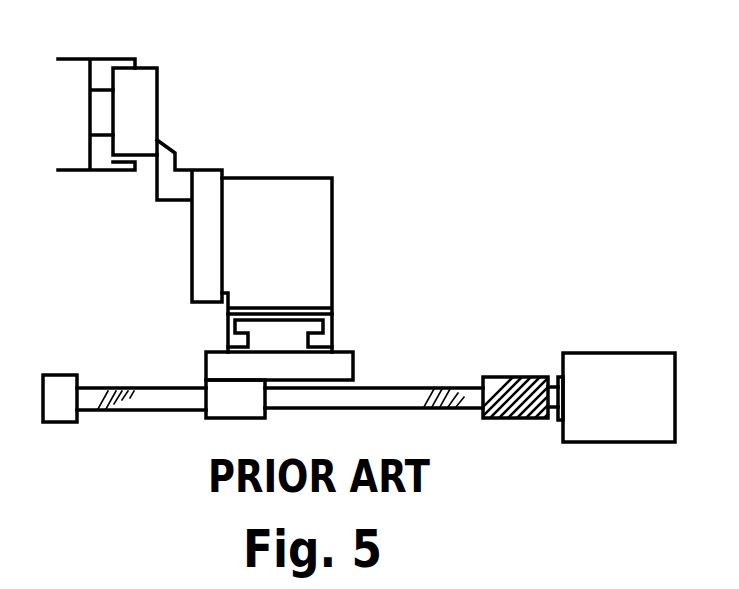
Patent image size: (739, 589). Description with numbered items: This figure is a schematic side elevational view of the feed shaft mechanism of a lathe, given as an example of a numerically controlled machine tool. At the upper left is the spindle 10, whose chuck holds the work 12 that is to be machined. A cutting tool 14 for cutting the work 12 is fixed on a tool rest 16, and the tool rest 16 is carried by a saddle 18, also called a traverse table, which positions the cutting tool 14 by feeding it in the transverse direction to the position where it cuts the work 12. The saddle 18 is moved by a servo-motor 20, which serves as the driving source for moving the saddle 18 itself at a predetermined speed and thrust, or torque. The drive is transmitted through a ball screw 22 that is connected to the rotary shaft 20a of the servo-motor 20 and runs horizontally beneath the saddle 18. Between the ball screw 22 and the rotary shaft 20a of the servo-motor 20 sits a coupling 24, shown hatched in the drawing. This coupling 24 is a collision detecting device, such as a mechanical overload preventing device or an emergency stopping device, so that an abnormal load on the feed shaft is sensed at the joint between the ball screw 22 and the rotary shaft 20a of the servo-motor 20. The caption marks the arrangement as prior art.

The spindle 10 is at (80, 62).
The work 12 is at (155, 68).
The cutting tool 14 is at (160, 146).
The tool rest 16 is at (297, 190).
The saddle 18 is at (330, 343).
The servo-motor 20 is at (637, 368).
The rotary shaft 20a is at (555, 417).
The ball screw 22 is at (382, 395).
The coupling 24 is at (508, 377).